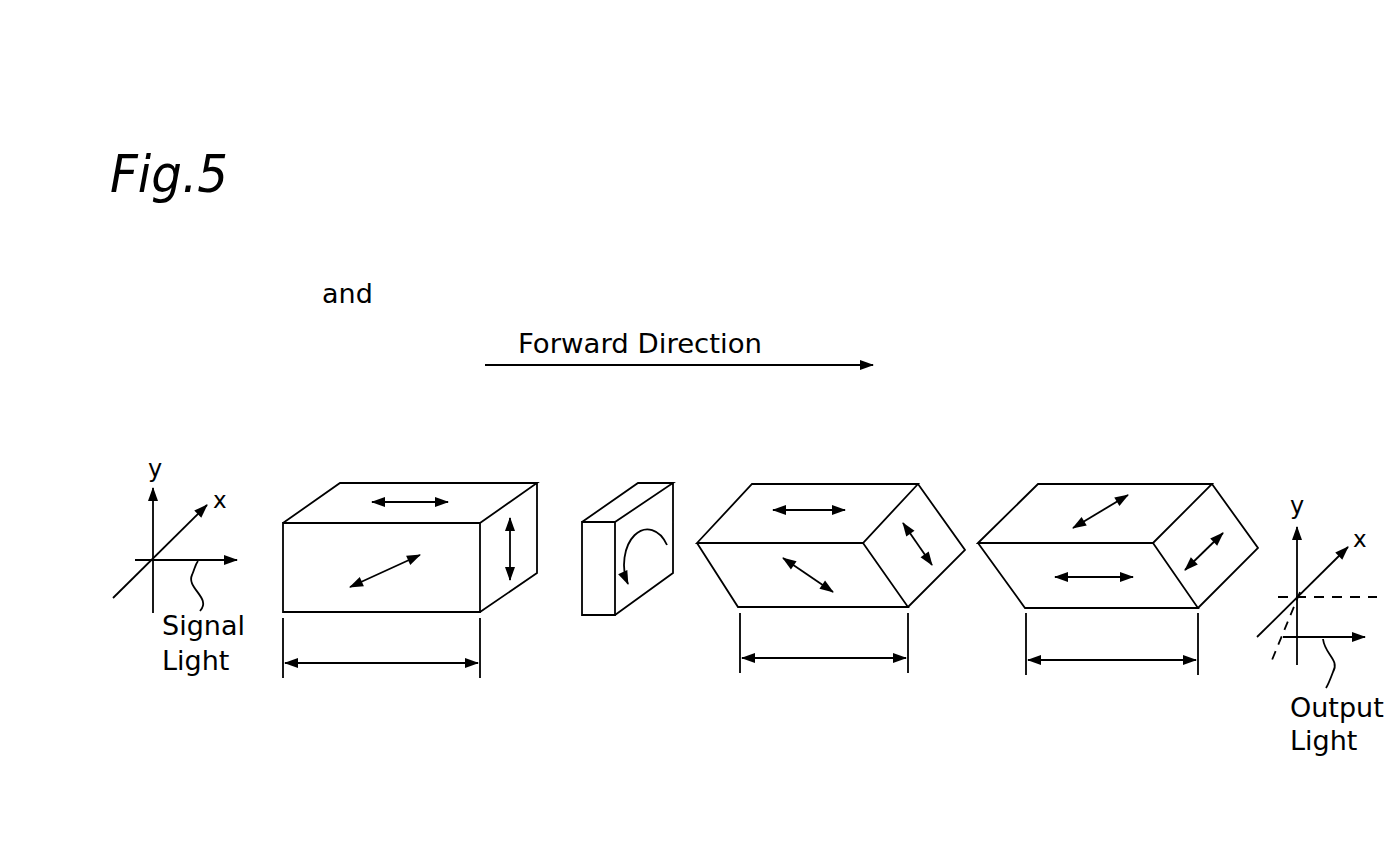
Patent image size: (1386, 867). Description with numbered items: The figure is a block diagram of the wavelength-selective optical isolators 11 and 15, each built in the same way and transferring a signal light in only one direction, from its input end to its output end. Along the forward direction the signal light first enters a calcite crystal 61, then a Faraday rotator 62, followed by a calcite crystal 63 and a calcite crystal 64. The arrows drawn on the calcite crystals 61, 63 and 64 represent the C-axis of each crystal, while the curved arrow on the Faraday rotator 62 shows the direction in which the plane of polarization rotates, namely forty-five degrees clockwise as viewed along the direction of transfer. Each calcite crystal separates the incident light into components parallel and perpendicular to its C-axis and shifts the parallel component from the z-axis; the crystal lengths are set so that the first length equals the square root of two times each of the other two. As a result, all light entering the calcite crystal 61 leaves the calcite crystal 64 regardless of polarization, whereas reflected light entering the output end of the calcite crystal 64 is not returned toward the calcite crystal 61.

The optical isolator 11 is at (306, 308).
The optical isolator 15 is at (423, 308).
The calcite crystal 61 is at (425, 482).
The Faraday rotator 62 is at (600, 517).
The calcite crystal 63 is at (860, 482).
The calcite crystal 64 is at (1117, 483).